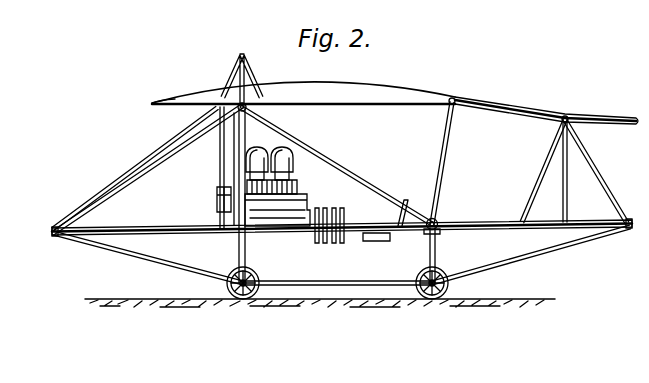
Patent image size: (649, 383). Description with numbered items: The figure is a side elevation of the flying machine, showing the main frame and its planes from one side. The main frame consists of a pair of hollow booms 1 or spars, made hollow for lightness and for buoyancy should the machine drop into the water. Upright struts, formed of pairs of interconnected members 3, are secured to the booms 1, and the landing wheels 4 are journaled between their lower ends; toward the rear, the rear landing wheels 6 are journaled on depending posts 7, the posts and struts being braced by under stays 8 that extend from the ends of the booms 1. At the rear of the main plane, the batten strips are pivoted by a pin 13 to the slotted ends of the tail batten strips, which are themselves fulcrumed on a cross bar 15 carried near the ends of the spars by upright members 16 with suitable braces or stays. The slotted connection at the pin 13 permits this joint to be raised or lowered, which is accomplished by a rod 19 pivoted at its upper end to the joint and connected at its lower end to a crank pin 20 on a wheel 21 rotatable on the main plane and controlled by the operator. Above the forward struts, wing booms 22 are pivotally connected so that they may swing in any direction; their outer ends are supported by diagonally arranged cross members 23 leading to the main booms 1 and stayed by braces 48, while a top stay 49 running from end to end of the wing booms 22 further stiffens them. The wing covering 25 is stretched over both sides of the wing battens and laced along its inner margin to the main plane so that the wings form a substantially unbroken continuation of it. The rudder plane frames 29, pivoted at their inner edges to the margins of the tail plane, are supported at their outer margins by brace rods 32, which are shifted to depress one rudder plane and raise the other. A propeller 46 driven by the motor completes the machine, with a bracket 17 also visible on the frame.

The booms 1 is at (146, 228).
The upright strut members 3 is at (220, 153).
The landing wheels 4 is at (227, 286).
The rear landing wheels 6 is at (448, 289).
The depending posts 7 is at (436, 252).
The under stays 8 is at (160, 260).
The pin 13 is at (453, 99).
The cross bar 15 is at (300, 183).
The upright members 16 is at (543, 167).
The bracket 17 is at (372, 241).
The rod 19 is at (445, 152).
The crank pin 20 is at (430, 219).
The wheel 21 is at (438, 221).
The wing booms 22 is at (238, 104).
The diagonally arranged cross members 23 is at (136, 177).
The wing covering 25 is at (308, 92).
The rudder plane frames 29 is at (505, 107).
The brace rods 32 is at (567, 197).
The propeller 46 is at (217, 185).
The braces 48 is at (178, 136).
The top stay 49 is at (242, 54).